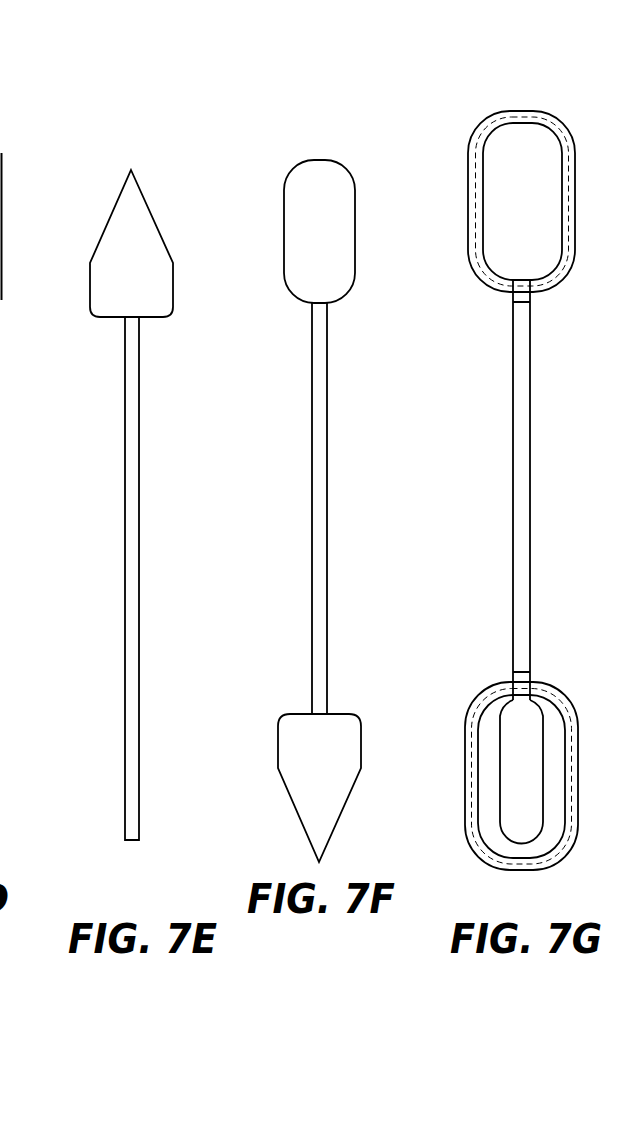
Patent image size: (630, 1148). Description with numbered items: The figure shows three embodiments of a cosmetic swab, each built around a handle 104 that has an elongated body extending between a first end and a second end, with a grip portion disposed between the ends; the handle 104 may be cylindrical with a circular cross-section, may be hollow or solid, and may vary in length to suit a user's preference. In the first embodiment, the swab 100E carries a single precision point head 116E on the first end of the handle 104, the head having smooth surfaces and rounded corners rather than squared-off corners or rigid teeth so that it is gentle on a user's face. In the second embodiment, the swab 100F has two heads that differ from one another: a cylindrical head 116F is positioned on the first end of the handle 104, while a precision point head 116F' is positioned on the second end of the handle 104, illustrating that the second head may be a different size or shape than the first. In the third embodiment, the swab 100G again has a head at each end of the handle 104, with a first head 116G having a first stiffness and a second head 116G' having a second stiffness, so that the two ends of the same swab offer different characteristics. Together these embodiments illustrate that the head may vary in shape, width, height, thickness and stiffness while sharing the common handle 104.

In FIG. 7E, the cosmetic swab 100E is at (115, 163).
In FIG. 7F, the cosmetic swab 100F is at (292, 159).
In FIG. 7G, the cosmetic swab 100G is at (487, 109).
In FIG. 7E, the handle 104 is at (139, 547).
In FIG. 7F, the handle 104 is at (327, 548).
In FIG. 7G, the handle 104 is at (530, 547).
In FIG. 7E, the head 116E is at (113, 300).
In FIG. 7F, the head 116F is at (294, 258).
In FIG. 7F, the second head 116F' is at (289, 760).
In FIG. 7G, the first head 116G is at (504, 224).
In FIG. 7G, the second head 116G' is at (547, 757).